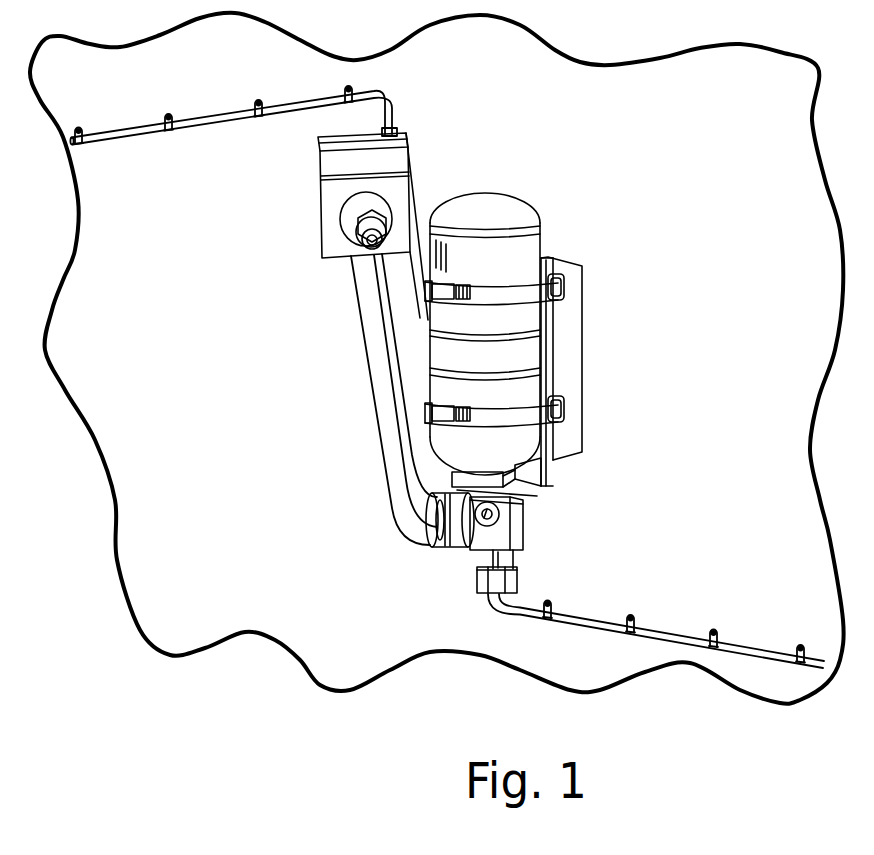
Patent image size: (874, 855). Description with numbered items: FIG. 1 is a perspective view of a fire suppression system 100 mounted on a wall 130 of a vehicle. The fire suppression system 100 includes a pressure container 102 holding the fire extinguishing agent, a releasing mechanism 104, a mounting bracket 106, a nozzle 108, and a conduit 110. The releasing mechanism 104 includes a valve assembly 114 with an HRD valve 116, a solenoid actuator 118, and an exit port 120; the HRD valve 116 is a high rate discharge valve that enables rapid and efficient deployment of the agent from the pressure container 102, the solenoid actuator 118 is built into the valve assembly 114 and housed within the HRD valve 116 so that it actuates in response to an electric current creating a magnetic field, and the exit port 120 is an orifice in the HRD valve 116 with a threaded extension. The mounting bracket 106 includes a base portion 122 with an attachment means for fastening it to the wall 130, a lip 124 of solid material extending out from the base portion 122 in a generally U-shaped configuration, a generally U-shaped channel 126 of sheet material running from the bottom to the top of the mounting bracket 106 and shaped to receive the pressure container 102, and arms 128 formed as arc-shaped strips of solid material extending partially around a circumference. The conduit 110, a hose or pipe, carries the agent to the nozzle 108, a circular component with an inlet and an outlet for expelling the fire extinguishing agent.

The fire suppression system 100 is at (668, 124).
The pressure container 102 is at (488, 209).
The releasing mechanism 104 is at (540, 550).
The mounting bracket 106 is at (597, 325).
The nozzle 108 is at (345, 219).
The conduit 110 is at (372, 424).
The valve assembly 114 is at (520, 512).
The HRD valve 116 is at (505, 501).
The solenoid actuator 118 is at (477, 583).
The exit port 120 is at (458, 547).
The base portion 122 is at (582, 294).
The lip 124 is at (548, 482).
The channel 126 is at (546, 343).
The arms 128 is at (515, 420).
The wall 130 is at (762, 365).